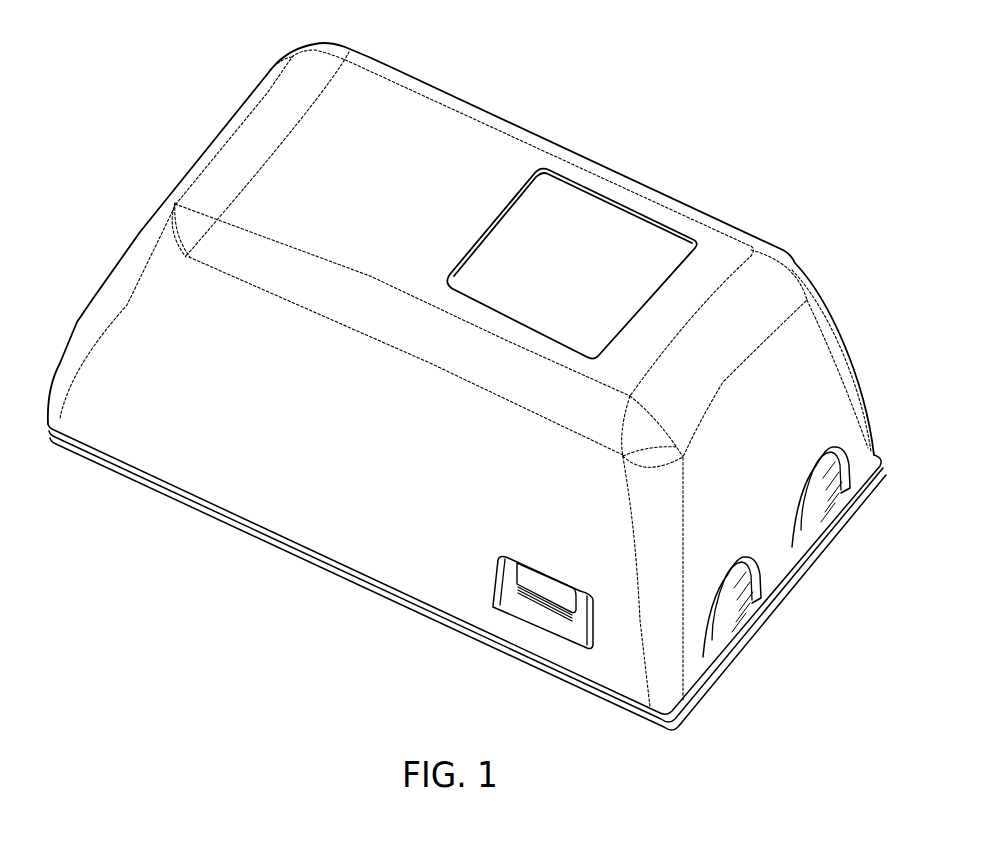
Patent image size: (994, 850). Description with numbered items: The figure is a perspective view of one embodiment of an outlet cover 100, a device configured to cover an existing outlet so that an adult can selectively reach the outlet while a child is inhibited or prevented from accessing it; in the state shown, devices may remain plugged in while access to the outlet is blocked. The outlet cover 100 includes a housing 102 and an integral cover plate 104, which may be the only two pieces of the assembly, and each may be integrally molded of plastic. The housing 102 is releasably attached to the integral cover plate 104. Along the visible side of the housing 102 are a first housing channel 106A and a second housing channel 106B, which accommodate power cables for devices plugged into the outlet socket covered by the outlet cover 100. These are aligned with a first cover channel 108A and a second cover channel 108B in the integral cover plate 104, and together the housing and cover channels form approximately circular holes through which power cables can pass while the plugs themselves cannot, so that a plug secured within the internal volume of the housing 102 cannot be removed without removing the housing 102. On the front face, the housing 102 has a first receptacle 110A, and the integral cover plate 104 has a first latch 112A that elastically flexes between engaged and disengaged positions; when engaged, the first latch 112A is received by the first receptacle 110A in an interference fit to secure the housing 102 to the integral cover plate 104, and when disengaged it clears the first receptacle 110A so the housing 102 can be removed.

The outlet cover 100 is at (770, 69).
The housing 102 is at (805, 282).
The integral cover plate 104 is at (292, 547).
The first housing channel 106A is at (706, 609).
The second housing channel 106B is at (833, 446).
The first cover channel 108A is at (717, 630).
The second cover channel 108B is at (810, 515).
The first receptacle 110A is at (492, 588).
The first latch 112A is at (553, 622).